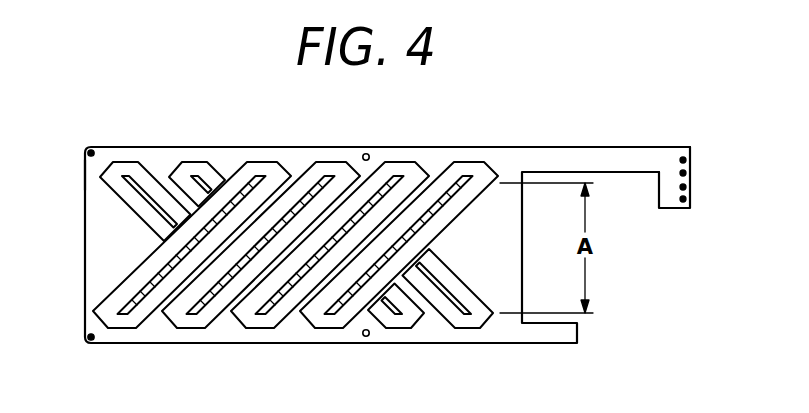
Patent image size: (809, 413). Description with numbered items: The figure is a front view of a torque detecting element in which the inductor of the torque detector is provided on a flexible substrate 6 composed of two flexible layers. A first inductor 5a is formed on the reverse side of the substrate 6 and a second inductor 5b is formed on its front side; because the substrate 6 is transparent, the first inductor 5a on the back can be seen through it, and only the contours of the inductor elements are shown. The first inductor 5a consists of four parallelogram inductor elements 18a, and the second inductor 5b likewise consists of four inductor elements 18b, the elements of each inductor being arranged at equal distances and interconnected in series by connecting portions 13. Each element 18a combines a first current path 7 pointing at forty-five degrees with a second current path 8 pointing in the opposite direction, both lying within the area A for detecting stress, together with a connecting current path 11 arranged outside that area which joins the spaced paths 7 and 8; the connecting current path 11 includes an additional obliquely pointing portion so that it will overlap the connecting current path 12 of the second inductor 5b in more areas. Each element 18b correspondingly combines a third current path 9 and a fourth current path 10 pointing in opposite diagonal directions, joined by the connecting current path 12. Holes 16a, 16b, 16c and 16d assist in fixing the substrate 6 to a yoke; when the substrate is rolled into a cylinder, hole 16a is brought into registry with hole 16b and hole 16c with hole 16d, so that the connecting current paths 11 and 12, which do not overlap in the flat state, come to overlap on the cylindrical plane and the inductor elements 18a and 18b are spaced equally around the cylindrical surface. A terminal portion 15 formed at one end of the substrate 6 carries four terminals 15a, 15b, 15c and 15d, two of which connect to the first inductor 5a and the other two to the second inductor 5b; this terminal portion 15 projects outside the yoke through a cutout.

The first inductor 5a is at (112, 171).
The second inductor 5b is at (147, 330).
The substrate 6 is at (84, 244).
The first current path 7 is at (135, 208).
The second current path 8 is at (149, 176).
The third current path 9 is at (113, 298).
The fourth current path 10 is at (146, 305).
The connecting current path 11 is at (85, 163).
The connecting current path 12 is at (164, 245).
The connecting portion 13 is at (432, 178).
The terminal portion 15 is at (657, 187).
The terminal 15a is at (683, 160).
The terminal 15b is at (683, 173).
The terminal 15c is at (683, 187).
The terminal 15d is at (683, 199).
The hole 16a is at (366, 154).
The hole 16b is at (92, 150).
The hole 16c is at (366, 340).
The hole 16d is at (91, 343).
The inductor element 18a is at (455, 278).
The inductor element 18b is at (447, 216).